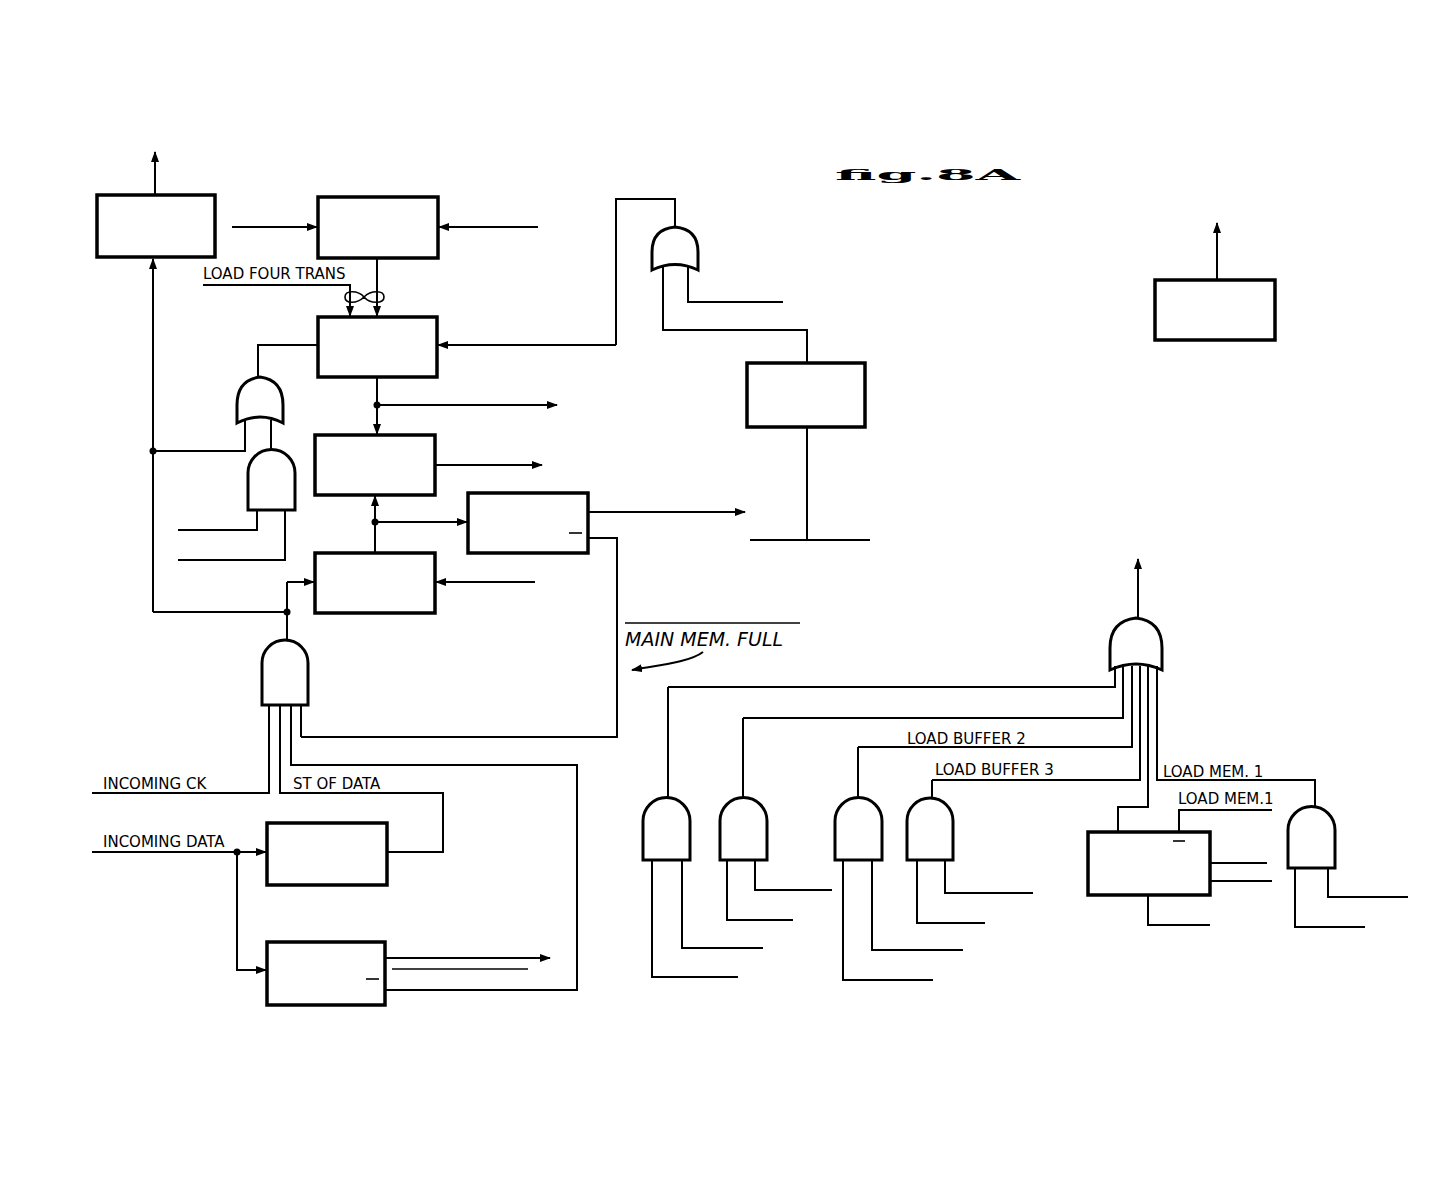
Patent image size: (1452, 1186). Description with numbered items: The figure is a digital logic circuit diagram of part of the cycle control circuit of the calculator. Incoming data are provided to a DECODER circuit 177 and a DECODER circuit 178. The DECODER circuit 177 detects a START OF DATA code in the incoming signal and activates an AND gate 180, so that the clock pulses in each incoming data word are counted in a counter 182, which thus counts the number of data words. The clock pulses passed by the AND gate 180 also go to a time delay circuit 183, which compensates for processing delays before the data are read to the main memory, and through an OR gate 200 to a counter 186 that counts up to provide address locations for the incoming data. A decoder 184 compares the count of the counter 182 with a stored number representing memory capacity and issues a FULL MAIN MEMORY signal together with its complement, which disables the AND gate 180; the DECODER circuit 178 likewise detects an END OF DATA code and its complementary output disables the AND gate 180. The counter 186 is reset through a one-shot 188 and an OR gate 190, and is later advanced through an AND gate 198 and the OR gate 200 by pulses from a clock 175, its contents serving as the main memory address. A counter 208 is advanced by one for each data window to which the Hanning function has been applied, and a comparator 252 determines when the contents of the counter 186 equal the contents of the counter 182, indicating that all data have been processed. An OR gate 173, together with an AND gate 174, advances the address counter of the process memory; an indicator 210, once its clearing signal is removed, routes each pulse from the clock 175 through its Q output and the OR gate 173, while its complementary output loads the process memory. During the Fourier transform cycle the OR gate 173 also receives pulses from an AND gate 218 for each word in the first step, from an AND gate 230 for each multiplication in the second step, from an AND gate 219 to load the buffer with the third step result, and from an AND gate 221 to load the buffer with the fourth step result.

The time delay circuit 183 is at (202, 194).
The counter 208 is at (417, 259).
The counter 186 is at (353, 377).
The OR gate 200 is at (237, 395).
The AND gate 198 is at (248, 465).
The comparator 252 is at (350, 495).
The decoder 184 is at (570, 493).
The counter 182 is at (380, 613).
The AND gate 180 is at (308, 680).
The DECODER circuit 177 is at (388, 870).
The DECODER circuit 178 is at (310, 940).
The OR gate 190 is at (697, 240).
The one-shot 188 is at (830, 363).
The clock 175 is at (1275, 310).
The OR gate 173 is at (1162, 650).
The AND gate 221 is at (680, 798).
The AND gate 219 is at (752, 798).
The AND gate 230 is at (838, 802).
The AND gate 218 is at (920, 798).
The indicator 210 is at (1112, 895).
The AND gate 174 is at (1335, 818).